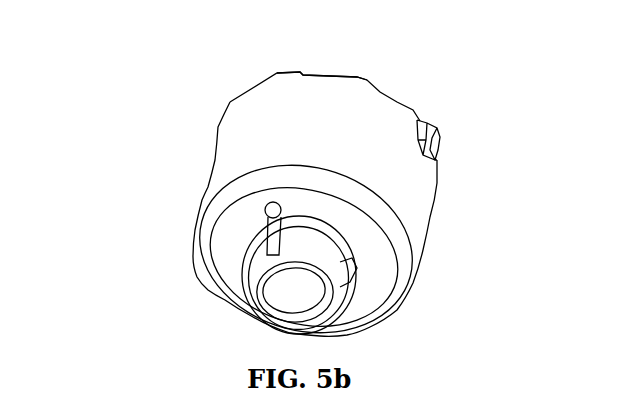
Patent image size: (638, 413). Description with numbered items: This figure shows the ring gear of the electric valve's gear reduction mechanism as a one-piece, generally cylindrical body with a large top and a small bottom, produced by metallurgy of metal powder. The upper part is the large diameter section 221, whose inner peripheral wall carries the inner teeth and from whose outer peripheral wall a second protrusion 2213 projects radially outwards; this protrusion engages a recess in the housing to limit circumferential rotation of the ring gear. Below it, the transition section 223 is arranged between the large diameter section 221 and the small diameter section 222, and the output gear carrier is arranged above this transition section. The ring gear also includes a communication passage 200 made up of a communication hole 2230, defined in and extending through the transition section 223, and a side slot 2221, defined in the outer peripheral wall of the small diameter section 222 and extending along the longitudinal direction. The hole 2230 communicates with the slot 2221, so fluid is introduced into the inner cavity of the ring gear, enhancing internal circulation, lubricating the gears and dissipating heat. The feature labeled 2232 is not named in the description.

The large diameter section 221 is at (248, 138).
The top edge portion of housing 2232 is at (367, 80).
The second protrusion 2213 is at (437, 135).
The transition section 223 is at (355, 232).
The small diameter section 222 is at (342, 273).
The communication passage 200 is at (194, 216).
The side slot 2221 is at (272, 243).
The communication hole 2230 is at (266, 206).